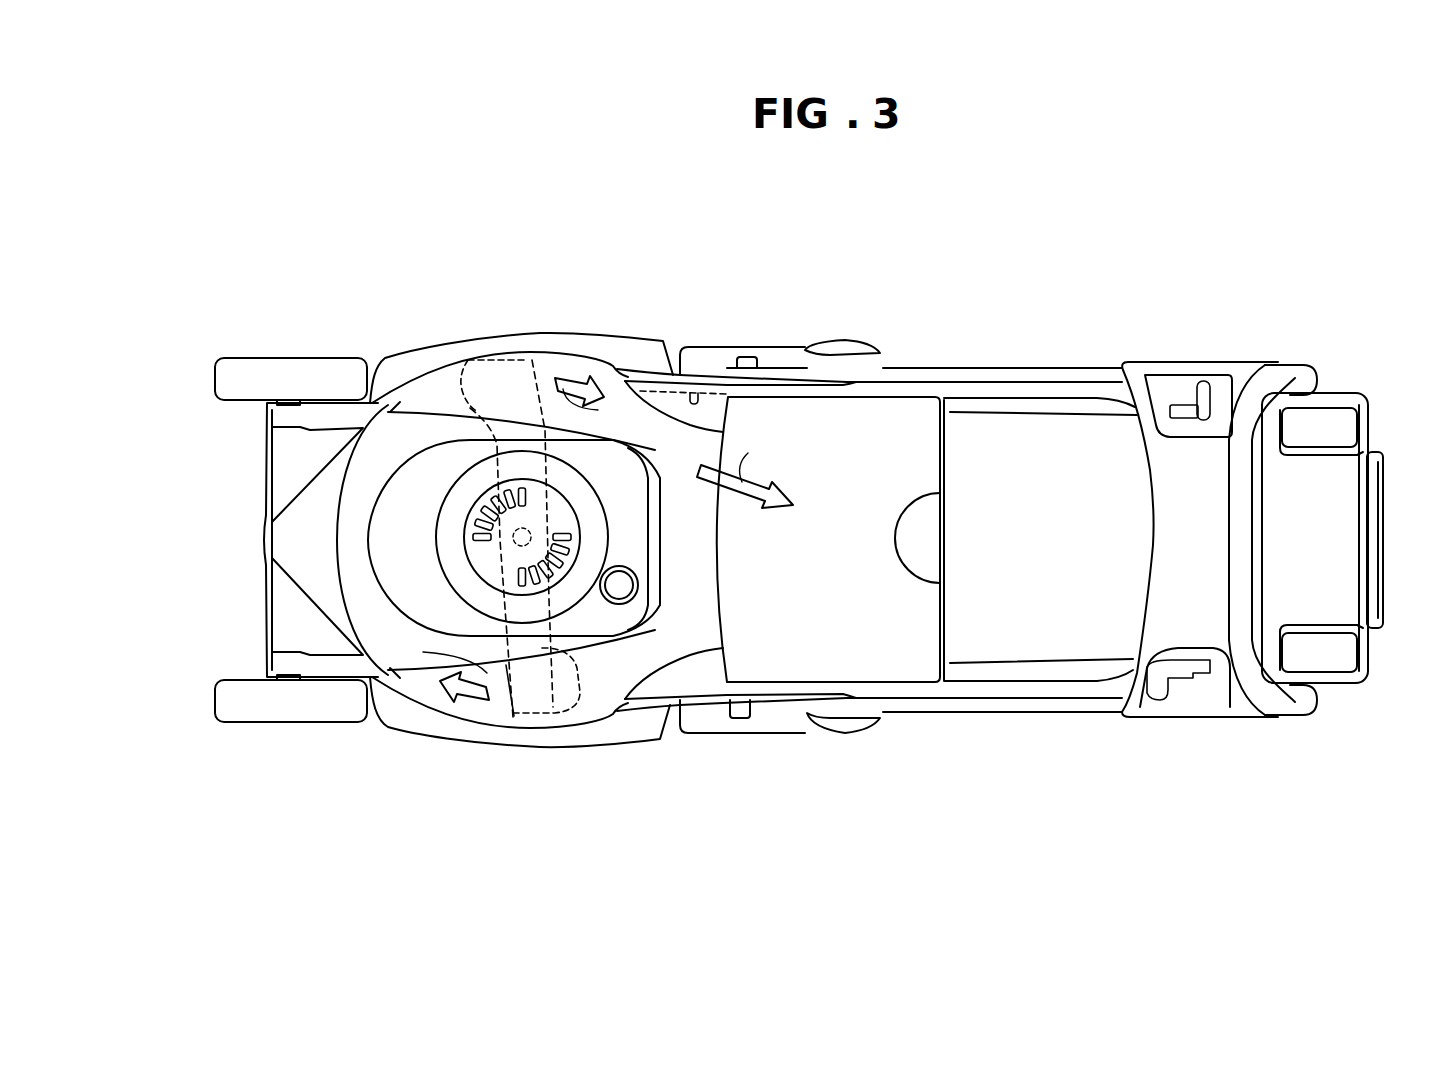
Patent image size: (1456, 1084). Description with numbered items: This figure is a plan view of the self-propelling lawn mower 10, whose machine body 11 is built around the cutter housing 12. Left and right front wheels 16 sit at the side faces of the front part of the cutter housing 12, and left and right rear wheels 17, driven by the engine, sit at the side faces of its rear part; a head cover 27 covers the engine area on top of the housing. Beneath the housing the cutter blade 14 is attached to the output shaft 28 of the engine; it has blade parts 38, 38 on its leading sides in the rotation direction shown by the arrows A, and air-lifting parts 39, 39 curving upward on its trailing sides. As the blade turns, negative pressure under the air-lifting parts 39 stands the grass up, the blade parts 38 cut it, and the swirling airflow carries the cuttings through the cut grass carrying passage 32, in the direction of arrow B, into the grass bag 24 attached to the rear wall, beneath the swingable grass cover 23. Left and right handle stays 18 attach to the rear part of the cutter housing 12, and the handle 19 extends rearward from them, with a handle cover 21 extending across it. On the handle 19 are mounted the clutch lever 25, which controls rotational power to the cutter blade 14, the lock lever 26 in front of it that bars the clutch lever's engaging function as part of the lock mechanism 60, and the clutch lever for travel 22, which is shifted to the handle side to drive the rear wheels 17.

The lawn mower 10 is at (232, 170).
The machine body 11 is at (212, 528).
The cutter housing 12 is at (600, 750).
The cutter blade 14 is at (505, 348).
The front wheels 16 is at (284, 358).
The rear wheels 17 is at (782, 345).
The handle stays 18 is at (647, 375).
The handle 19 is at (977, 360).
The handle cover 21 is at (1175, 728).
The clutch lever for travel 22 is at (1343, 448).
The grass cover 23 is at (898, 396).
The grass bag 24 is at (1007, 408).
The clutch lever 25 is at (1330, 385).
The lock lever 26 is at (1172, 340).
The head cover 27 is at (413, 445).
The output shaft 28 is at (520, 542).
The cut grass carrying passage 32 is at (695, 390).
The blade parts 38 is at (522, 356).
The air-lifting parts 39 is at (492, 368).
The lock mechanism 60 is at (1218, 356).